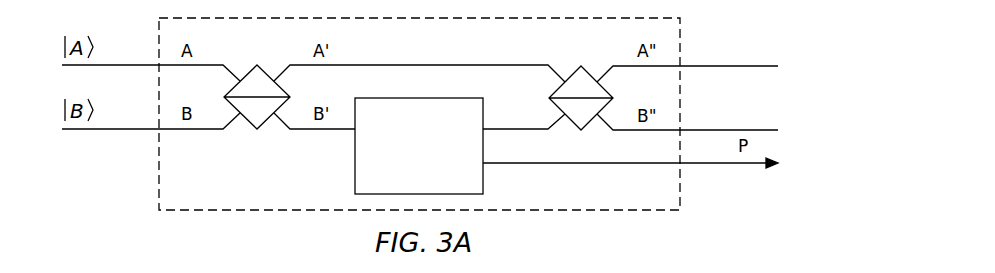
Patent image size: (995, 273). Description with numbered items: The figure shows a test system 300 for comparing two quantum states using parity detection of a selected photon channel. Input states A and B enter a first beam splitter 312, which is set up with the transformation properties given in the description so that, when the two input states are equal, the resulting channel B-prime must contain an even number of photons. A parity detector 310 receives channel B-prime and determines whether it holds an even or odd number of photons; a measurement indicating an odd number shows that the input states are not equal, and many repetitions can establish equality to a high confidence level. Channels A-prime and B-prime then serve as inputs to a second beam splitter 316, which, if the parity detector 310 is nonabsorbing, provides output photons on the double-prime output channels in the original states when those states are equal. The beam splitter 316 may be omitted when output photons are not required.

The test system 300 is at (433, 52).
The parity detector 310 is at (405, 181).
The beam splitter 312 is at (259, 64).
The beam splitter 316 is at (584, 66).